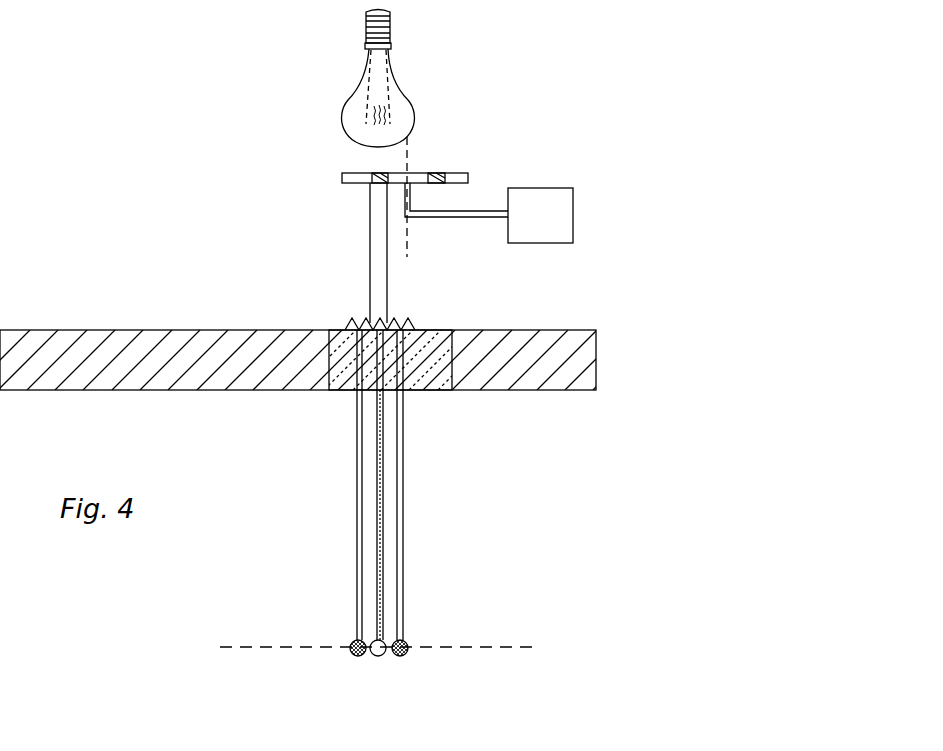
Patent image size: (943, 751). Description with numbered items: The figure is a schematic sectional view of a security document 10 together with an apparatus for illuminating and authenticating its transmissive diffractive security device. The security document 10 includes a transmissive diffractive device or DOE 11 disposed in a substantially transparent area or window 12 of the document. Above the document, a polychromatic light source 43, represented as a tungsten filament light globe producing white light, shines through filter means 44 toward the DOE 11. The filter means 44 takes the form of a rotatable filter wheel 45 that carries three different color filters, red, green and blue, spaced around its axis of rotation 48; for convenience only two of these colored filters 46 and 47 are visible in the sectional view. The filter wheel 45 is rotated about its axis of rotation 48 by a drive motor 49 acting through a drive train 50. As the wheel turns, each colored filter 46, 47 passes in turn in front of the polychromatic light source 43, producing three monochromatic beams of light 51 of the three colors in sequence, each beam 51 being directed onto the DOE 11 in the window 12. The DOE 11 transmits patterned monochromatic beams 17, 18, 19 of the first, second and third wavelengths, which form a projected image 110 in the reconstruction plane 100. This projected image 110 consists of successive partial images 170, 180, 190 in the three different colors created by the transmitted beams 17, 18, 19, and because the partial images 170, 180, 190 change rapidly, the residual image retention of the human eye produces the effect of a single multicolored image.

The security document 10 is at (63, 344).
The transmissive diffractive device 11 is at (353, 322).
The window 12 is at (433, 378).
The patterned monochromatic beam of light 17 is at (405, 487).
The patterned monochromatic beam of light 18 is at (377, 507).
The patterned monochromatic beam of light 19 is at (357, 573).
The polychromatic light source 43 is at (362, 137).
The filter means 44 is at (467, 159).
The filter wheel 45 is at (342, 178).
The colored filter 46 is at (370, 197).
The colored filter 47 is at (437, 173).
The axis of rotation 48 is at (408, 235).
The drive motor 49 is at (560, 218).
The drive train 50 is at (485, 218).
The monochromatic beam of light 51 is at (378, 252).
The reconstruction plane 100 is at (507, 647).
The projected image 110 is at (346, 640).
The partial image 170 is at (408, 653).
The partial image 180 is at (383, 657).
The partial image 190 is at (353, 656).